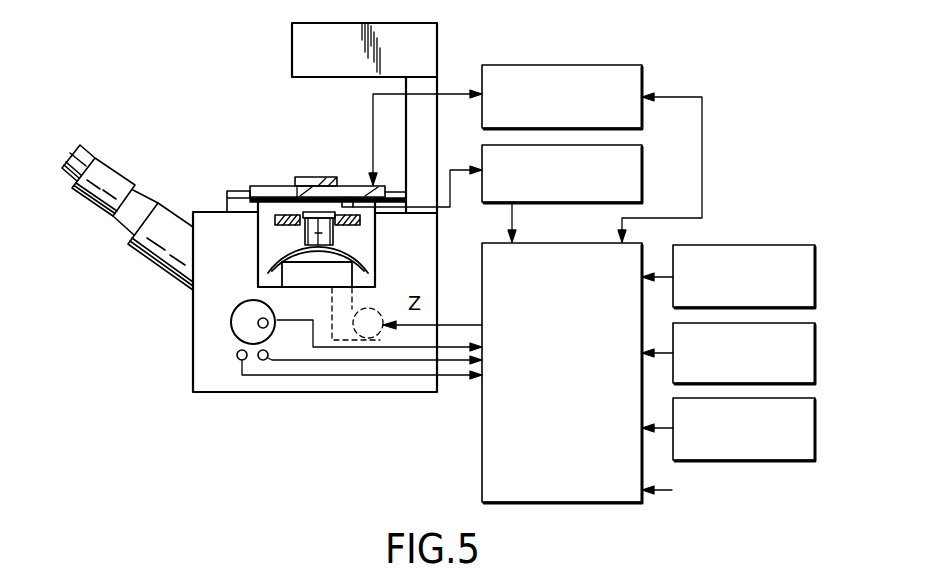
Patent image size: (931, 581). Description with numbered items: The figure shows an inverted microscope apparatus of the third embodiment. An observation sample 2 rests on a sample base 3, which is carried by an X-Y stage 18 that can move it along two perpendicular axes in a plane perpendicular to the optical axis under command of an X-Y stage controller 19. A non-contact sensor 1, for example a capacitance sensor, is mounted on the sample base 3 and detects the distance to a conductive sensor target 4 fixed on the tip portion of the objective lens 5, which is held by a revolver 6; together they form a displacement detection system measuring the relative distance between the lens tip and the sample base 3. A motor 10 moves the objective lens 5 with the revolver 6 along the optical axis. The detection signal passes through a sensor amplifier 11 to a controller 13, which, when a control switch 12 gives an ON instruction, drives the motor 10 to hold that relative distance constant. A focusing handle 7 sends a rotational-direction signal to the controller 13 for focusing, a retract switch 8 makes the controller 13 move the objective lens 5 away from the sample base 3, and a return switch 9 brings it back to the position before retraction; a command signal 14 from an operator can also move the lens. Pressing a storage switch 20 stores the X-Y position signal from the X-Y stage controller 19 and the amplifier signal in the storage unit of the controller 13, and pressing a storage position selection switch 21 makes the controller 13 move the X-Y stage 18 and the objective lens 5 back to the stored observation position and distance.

The non-contact sensor 1 is at (347, 198).
The observation sample 2 is at (313, 177).
The sample base 3 is at (285, 186).
The sensor target 4 is at (283, 214).
The objective lens 5 is at (305, 237).
The revolver 6 is at (272, 257).
The focusing handle 7 is at (231, 320).
The retract switch 8 is at (237, 356).
The return switch 9 is at (268, 352).
The motor 10 is at (375, 310).
The sensor amplifier 11 is at (643, 173).
The control switch 12 is at (816, 283).
The controller 13 is at (482, 467).
The command signal 14 is at (713, 501).
The X-Y stage 18 is at (227, 193).
The X-Y stage controller 19 is at (618, 65).
The storage switch 20 is at (816, 359).
The storage position selection switch 21 is at (816, 432).